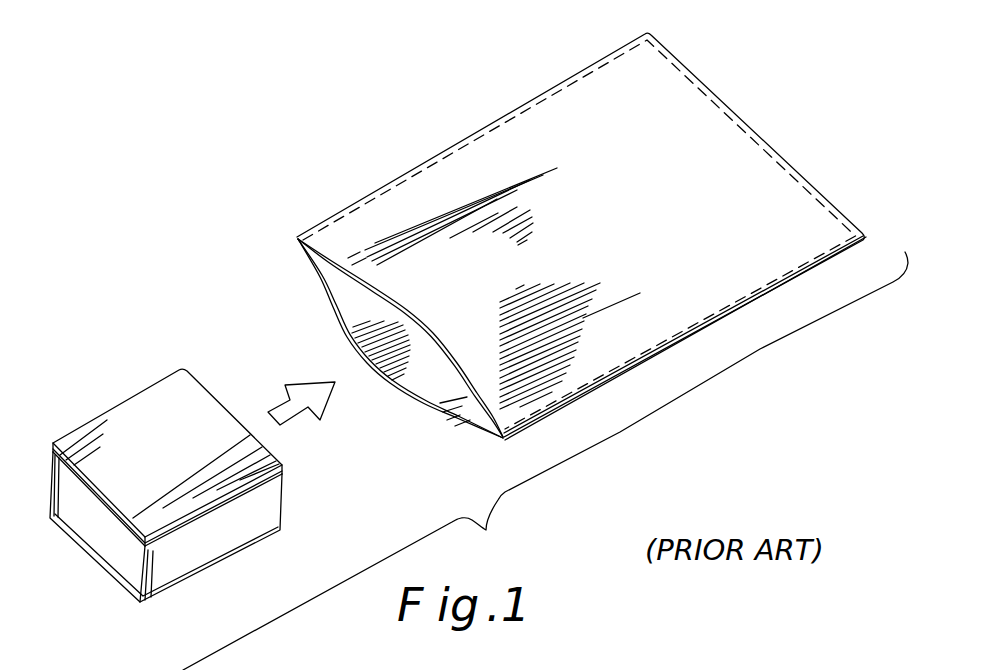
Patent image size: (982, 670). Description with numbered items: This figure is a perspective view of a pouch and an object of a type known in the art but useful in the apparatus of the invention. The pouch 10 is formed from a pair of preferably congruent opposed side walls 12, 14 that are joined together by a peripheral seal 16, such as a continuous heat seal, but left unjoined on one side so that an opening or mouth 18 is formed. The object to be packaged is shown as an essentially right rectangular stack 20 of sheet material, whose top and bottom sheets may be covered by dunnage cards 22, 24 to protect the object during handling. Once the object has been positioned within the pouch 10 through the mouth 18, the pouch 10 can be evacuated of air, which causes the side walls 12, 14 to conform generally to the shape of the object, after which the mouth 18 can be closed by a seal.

The pouch 10 is at (462, 137).
The side wall 12 is at (342, 253).
The side wall 14 is at (347, 295).
The peripheral seal 16 is at (548, 92).
The mouth 18 is at (427, 382).
The stack 20 is at (85, 525).
The dunnage card 22 is at (130, 403).
The dunnage card 24 is at (190, 580).